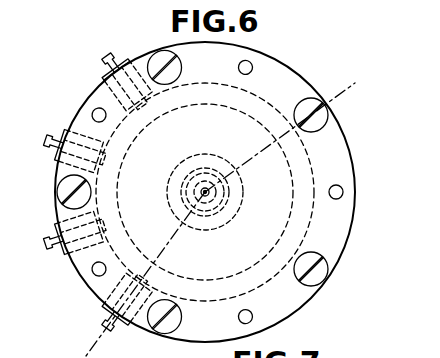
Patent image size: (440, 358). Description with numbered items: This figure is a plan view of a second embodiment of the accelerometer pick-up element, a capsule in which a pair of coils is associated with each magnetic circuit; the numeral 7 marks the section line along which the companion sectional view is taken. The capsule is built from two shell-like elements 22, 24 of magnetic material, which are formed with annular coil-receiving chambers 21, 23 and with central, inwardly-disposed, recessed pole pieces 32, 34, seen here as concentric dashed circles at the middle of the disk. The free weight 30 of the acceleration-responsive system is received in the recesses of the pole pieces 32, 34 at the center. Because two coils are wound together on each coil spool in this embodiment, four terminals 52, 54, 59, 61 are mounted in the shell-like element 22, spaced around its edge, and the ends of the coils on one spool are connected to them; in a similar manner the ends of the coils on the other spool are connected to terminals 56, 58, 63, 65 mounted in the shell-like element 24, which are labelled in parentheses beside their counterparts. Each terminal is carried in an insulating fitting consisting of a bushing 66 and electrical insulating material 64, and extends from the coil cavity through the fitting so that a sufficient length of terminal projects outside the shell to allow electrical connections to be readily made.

The section line 7- 7 is at (344, 74).
The annular chamber 21 is at (244, 192).
The annular chamber 23 is at (313, 208).
The shell-like element 22 is at (219, 192).
The shell-like element 24 is at (337, 259).
The free weight 30 is at (204, 214).
The pole piece 32 is at (226, 192).
The pole piece 34 is at (242, 193).
The terminal 52 is at (99, 302).
The terminal 56 is at (103, 327).
The terminal 54 is at (54, 235).
The terminal 58 is at (44, 243).
The terminal 59 is at (68, 139).
The terminal 63 is at (46, 139).
The terminal 61 is at (85, 64).
The terminal 65 is at (104, 60).
The electrical insulating material 64 is at (113, 68).
The bushing 66 is at (150, 51).